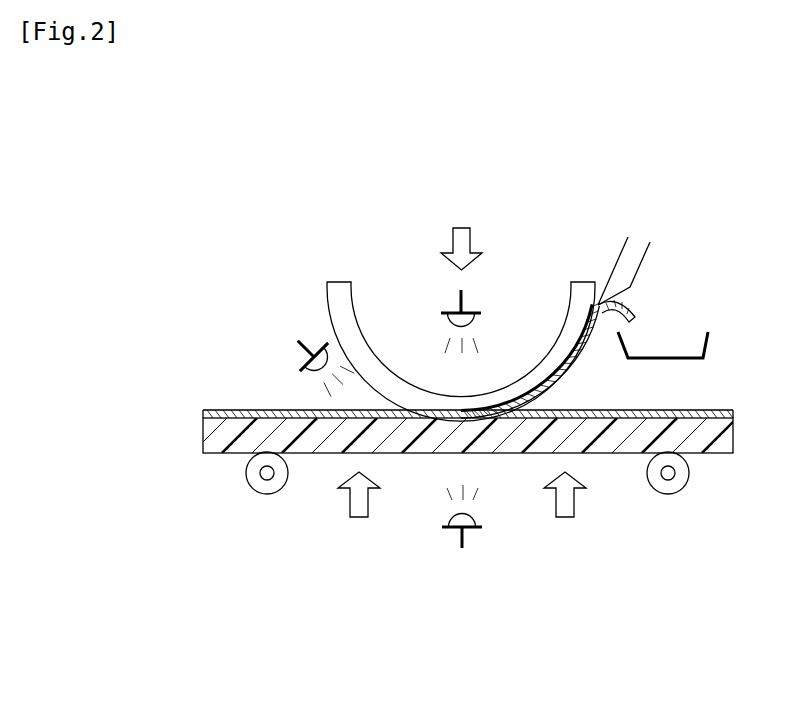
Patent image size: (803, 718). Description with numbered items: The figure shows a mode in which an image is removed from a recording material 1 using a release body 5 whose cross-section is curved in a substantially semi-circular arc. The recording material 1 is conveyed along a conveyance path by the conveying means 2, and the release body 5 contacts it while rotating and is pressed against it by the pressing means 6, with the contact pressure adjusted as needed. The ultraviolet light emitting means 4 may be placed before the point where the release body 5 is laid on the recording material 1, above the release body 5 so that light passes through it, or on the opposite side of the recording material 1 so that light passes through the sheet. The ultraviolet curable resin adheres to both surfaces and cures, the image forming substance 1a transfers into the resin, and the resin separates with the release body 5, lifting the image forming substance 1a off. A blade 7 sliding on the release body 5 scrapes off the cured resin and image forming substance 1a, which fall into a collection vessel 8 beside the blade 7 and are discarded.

The recording material 1 is at (202, 434).
The image forming substance 1a is at (203, 415).
The conveying means 2 is at (252, 487).
The ultraviolet light emitting means 4 is at (297, 339).
The release body 5 is at (356, 292).
The pressing means 6 is at (472, 243).
The blade 7 is at (636, 258).
The collection vessel 8 is at (711, 333).